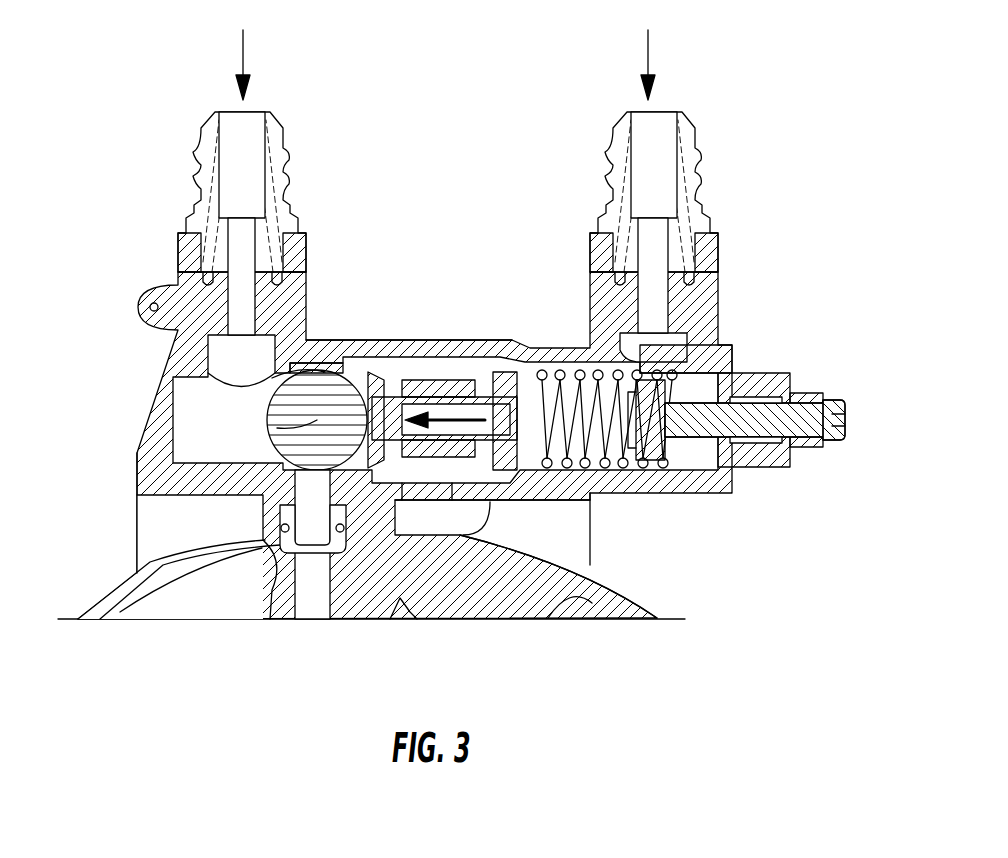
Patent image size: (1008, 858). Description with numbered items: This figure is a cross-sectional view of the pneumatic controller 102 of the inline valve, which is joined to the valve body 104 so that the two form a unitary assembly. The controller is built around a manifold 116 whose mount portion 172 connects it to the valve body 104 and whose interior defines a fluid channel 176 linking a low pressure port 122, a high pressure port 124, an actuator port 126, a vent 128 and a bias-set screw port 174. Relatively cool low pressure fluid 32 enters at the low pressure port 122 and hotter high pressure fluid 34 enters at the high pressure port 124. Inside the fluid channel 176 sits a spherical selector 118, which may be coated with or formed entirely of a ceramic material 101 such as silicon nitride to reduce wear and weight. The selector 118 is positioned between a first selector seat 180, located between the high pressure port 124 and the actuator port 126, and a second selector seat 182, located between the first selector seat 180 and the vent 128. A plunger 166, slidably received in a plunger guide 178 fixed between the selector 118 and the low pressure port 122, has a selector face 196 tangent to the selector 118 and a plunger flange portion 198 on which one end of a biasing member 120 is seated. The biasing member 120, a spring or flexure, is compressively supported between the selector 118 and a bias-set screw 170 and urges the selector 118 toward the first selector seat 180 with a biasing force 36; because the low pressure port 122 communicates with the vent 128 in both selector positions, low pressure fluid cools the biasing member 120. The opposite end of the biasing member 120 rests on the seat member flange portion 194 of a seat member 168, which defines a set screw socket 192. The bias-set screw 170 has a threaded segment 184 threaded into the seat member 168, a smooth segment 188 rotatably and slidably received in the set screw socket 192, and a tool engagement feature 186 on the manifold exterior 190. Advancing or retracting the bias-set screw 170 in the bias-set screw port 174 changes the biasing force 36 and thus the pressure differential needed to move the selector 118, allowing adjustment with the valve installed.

The pneumatic controller 102 is at (145, 708).
The valve body 104 is at (100, 606).
The low pressure fluid 32 is at (648, 58).
The high pressure fluid 34 is at (243, 58).
The biasing force 36 is at (505, 378).
The ceramic material 101 is at (310, 425).
The manifold 116 is at (488, 385).
The selector 118 is at (372, 445).
The biasing member 120 is at (580, 485).
The low pressure port 122 is at (657, 135).
The high pressure port 124 is at (233, 125).
The actuator port 126 is at (320, 598).
The vent 128 is at (440, 500).
The plunger 166 is at (388, 470).
The seat member 168 is at (558, 372).
The bias-set screw 170 is at (710, 422).
The mount portion 172 is at (160, 530).
The bias-set screw port 174 is at (777, 405).
The fluid channel 176 is at (483, 390).
The plunger guide 178 is at (447, 385).
The first selector seat 180 is at (320, 378).
The second selector seat 182 is at (245, 478).
The threaded segment 184 is at (743, 402).
The tool engagement feature 186 is at (840, 420).
The smooth segment 188 is at (640, 458).
The manifold exterior 190 is at (777, 380).
The set screw socket 192 is at (668, 448).
The seat member flange portion 194 is at (722, 345).
The selector face 196 is at (373, 430).
The plunger flange portion 198 is at (495, 390).